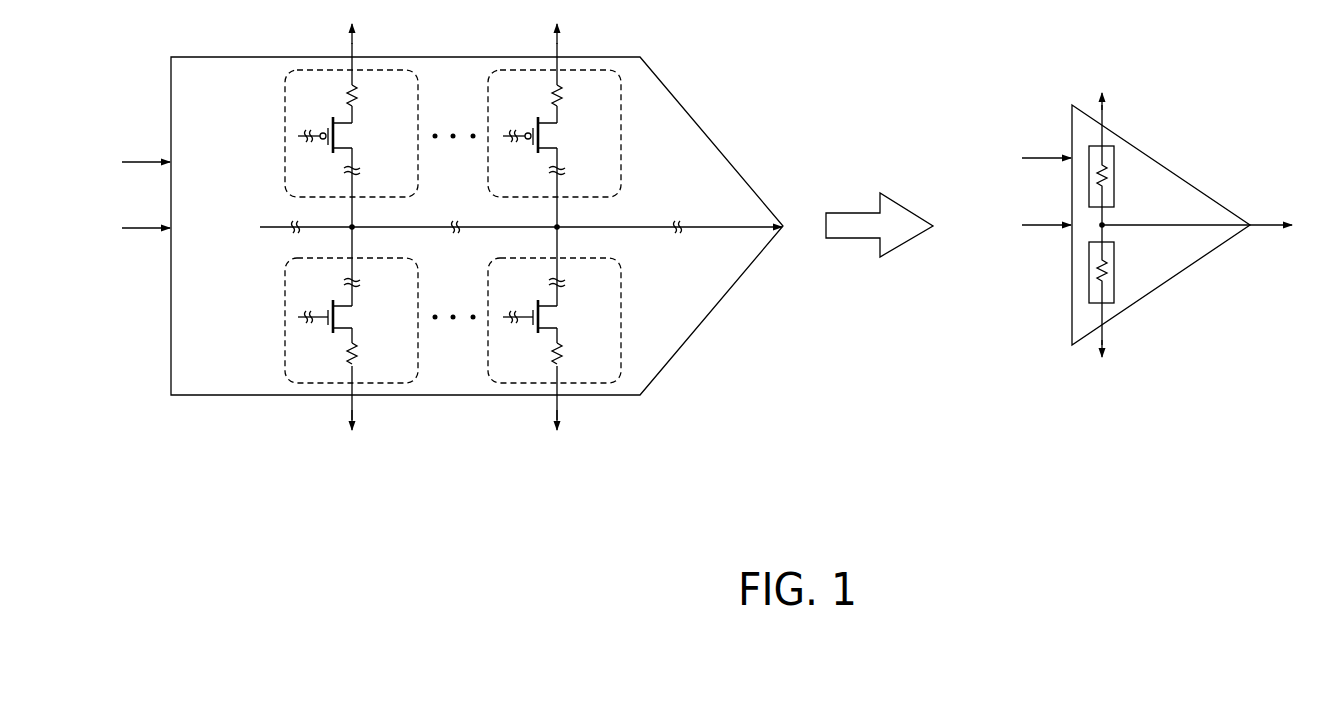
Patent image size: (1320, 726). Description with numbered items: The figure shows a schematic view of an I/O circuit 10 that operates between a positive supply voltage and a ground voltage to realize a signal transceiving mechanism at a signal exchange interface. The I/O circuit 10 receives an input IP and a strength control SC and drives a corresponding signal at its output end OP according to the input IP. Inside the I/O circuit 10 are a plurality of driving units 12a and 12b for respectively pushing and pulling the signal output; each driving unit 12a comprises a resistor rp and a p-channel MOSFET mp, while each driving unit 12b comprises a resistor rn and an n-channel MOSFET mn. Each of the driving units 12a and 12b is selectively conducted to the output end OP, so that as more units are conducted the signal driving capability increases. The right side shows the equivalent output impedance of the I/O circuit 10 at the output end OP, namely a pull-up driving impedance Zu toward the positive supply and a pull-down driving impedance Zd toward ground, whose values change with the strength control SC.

The I/O circuit 10 is at (171, 360).
The driving unit 12a is at (285, 125).
The driving unit 12b is at (285, 310).